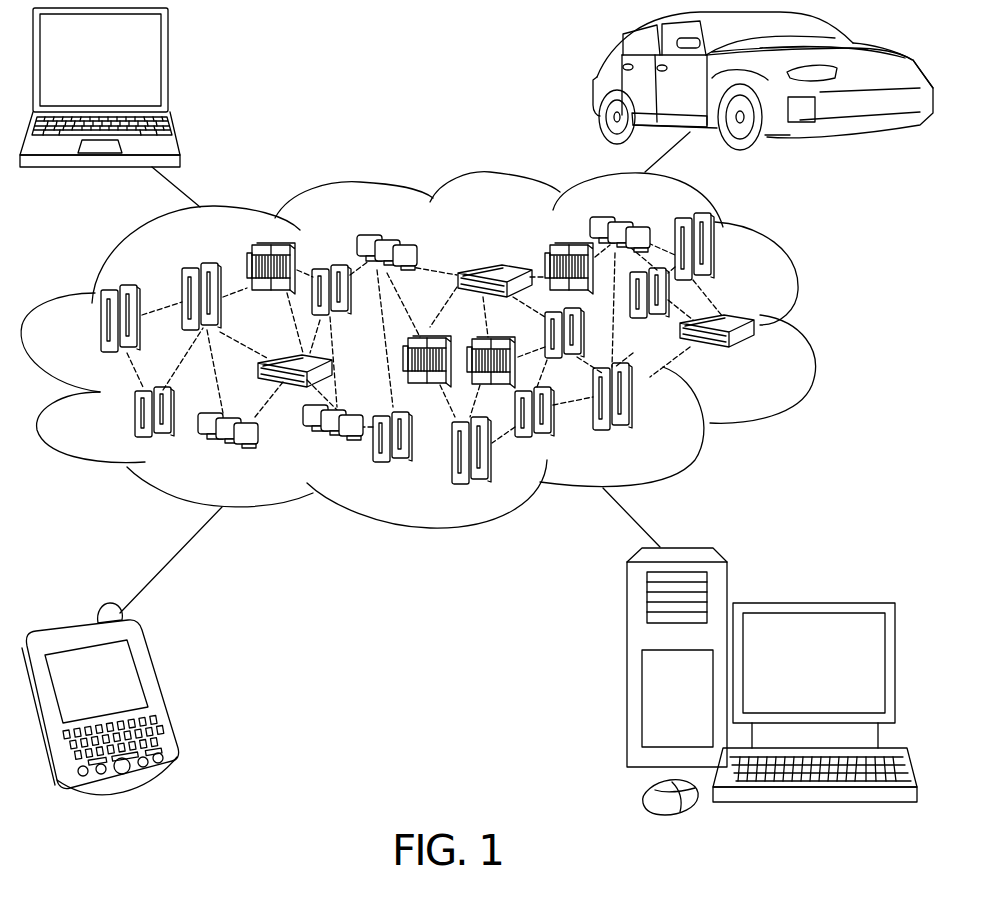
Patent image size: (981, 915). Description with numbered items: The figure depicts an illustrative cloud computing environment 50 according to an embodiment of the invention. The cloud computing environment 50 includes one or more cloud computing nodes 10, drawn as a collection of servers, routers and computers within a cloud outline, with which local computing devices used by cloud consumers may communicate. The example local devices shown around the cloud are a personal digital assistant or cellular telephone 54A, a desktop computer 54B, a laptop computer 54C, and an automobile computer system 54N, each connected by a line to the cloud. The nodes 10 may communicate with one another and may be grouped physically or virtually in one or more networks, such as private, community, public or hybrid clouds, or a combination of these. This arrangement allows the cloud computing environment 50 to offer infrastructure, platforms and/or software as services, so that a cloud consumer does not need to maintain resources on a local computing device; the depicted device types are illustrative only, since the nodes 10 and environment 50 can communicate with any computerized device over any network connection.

The cloud computing node 10 is at (755, 358).
The cloud computing environment 50 is at (810, 327).
The personal digital assistant (PDA) or cellular telephone 54A is at (157, 693).
The desktop computer 54B is at (810, 603).
The laptop computer 54C is at (170, 68).
The automobile computer system 54N is at (600, 80).